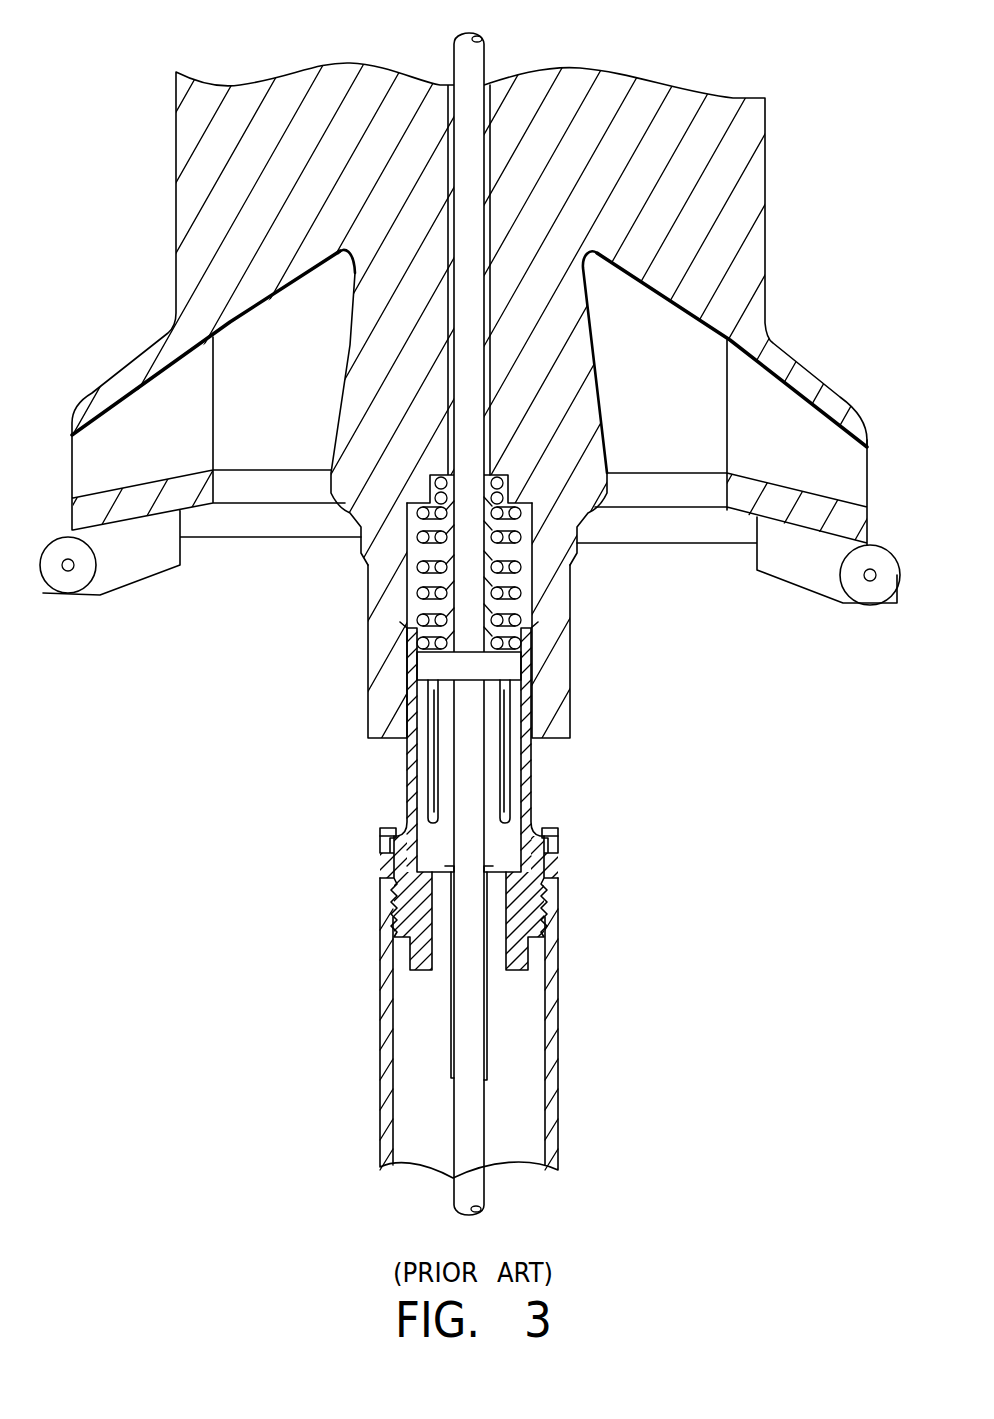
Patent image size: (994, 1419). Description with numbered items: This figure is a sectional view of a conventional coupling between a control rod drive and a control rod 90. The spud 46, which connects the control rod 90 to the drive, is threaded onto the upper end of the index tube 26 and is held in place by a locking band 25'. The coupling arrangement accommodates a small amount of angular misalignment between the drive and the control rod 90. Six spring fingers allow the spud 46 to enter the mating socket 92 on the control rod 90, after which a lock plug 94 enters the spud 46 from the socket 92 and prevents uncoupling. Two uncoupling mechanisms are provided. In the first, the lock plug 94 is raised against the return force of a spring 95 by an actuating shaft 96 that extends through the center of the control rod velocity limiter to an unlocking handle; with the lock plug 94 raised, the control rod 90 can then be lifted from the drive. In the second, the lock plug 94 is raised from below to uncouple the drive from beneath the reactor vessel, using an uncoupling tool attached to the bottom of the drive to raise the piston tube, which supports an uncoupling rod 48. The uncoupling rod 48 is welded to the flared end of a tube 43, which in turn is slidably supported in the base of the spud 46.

The control rod 90 is at (772, 167).
The mating socket 92 is at (570, 652).
The actuating shaft 96 is at (488, 58).
The spring 95 is at (518, 598).
The lock plug 94 is at (426, 664).
The spud 46 is at (533, 787).
The uncoupling rod 48 is at (465, 792).
The locking band 25' is at (562, 902).
The index tube 26 is at (558, 1145).
The tube 43 is at (452, 1072).